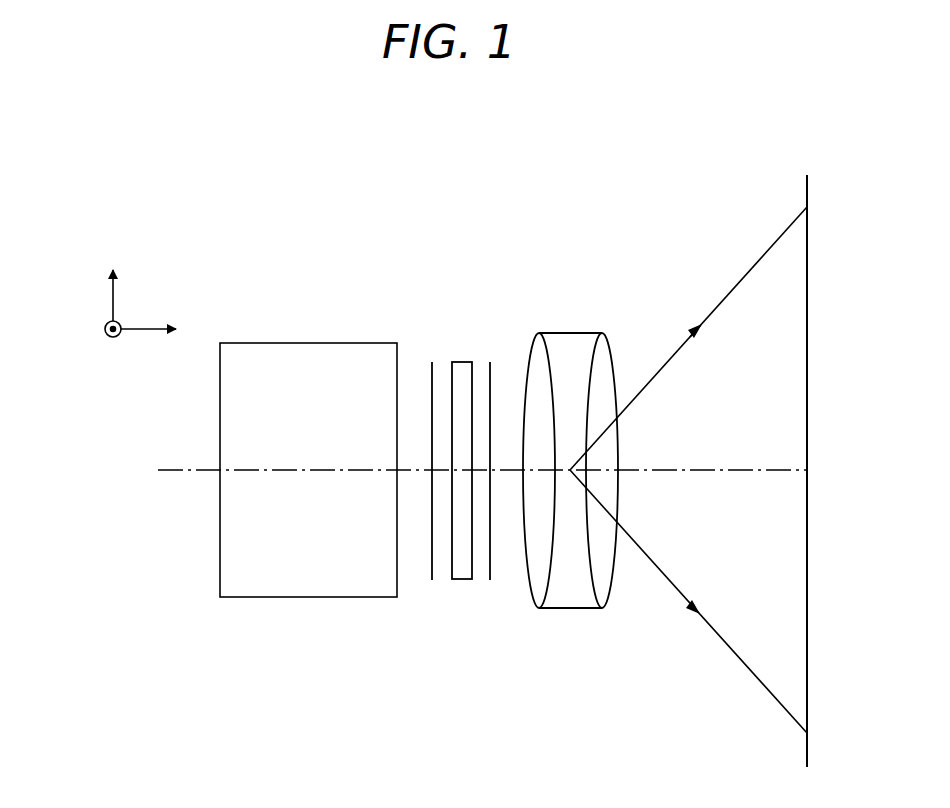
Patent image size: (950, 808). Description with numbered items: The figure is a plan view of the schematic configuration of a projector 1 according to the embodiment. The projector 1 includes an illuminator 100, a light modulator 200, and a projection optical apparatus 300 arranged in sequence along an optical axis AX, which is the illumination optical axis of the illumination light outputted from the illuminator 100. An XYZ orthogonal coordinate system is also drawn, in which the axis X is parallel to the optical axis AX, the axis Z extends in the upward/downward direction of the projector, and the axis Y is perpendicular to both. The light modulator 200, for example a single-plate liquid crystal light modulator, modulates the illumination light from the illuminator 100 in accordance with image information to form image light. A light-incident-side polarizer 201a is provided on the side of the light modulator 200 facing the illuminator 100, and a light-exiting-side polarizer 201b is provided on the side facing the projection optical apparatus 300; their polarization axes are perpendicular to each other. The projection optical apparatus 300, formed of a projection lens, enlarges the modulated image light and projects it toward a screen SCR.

The projector 1 is at (598, 163).
The illuminator 100 is at (270, 343).
The light modulator 200 is at (464, 582).
The light-incident-side polarizer 201a is at (432, 374).
The light-exiting-side polarizer 201b is at (490, 374).
The projection optical apparatus 300 is at (572, 333).
The optical axis AX is at (702, 470).
The screen SCR is at (803, 194).